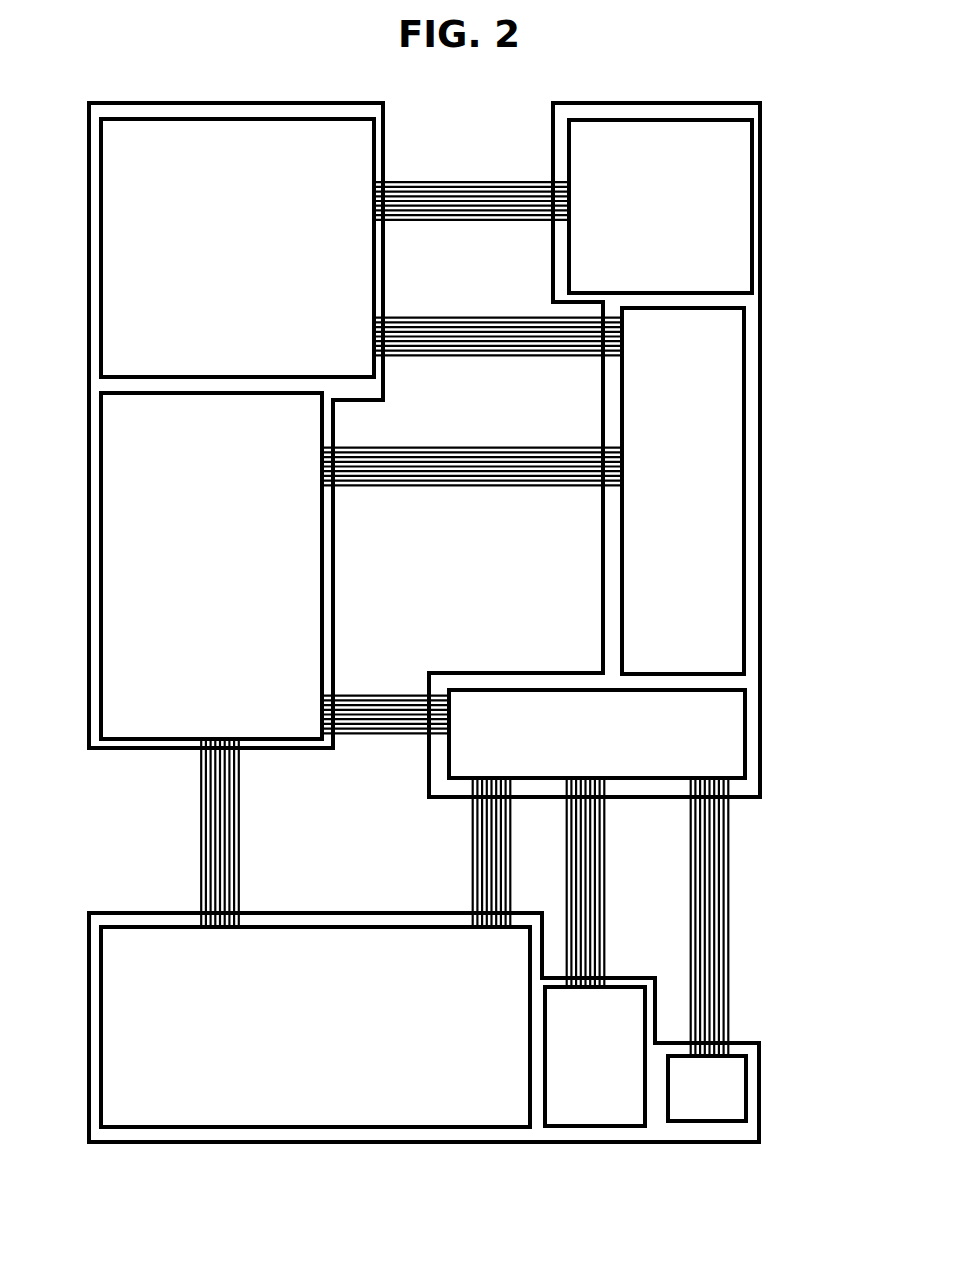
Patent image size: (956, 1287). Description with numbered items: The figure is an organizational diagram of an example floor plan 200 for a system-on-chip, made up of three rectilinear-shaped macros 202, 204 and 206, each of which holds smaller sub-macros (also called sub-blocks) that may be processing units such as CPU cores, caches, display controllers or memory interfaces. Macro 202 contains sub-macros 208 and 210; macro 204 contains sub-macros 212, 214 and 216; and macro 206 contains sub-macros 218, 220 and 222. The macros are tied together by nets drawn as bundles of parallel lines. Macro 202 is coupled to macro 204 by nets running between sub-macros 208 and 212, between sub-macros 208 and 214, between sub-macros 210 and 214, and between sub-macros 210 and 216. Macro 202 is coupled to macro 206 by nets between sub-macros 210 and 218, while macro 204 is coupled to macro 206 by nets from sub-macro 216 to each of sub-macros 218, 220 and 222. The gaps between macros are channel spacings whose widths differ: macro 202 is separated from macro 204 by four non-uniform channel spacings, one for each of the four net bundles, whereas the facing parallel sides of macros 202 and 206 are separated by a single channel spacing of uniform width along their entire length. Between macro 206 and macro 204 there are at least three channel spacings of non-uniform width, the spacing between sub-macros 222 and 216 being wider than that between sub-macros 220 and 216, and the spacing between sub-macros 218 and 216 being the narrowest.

The floor plan 200 is at (746, 74).
The macro 202 is at (112, 756).
The macro 204 is at (764, 806).
The macro 206 is at (160, 1148).
The sub-macro 208 is at (217, 261).
The sub-macro 210 is at (191, 577).
The sub-macro 212 is at (640, 218).
The sub-macro 214 is at (663, 502).
The sub-macro 216 is at (577, 746).
The sub-macro 218 is at (296, 1039).
The sub-macro 220 is at (575, 1068).
The sub-macro 222 is at (687, 1100).